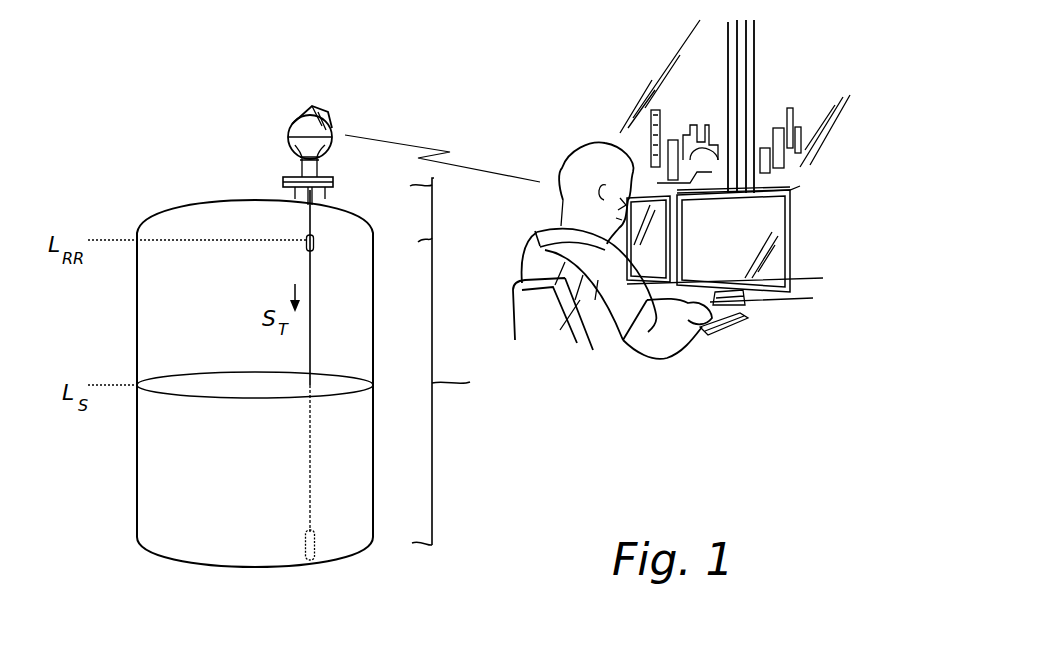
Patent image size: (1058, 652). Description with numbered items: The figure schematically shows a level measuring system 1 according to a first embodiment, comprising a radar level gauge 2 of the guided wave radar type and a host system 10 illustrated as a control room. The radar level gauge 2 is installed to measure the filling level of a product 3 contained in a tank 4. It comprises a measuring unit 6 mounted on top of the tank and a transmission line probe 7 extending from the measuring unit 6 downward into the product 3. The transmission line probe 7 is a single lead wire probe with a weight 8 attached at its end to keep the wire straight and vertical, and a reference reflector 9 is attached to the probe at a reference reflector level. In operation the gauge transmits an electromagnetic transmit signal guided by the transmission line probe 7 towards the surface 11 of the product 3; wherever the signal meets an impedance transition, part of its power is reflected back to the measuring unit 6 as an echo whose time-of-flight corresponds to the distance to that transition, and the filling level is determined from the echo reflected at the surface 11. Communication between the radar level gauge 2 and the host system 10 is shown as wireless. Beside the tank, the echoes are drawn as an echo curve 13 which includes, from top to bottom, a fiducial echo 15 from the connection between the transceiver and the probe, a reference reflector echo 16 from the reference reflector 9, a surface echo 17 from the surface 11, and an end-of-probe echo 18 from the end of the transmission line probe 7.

The level measuring system 1 is at (480, 64).
The radar level gauge 2 is at (263, 125).
The product 3 is at (232, 490).
The tank 4 is at (137, 327).
The measuring unit 6 is at (303, 115).
The transmission line probe 7 is at (311, 290).
The weight 8 is at (314, 545).
The reference reflector 9 is at (305, 245).
The host system 10 is at (790, 68).
The surface 11 is at (220, 383).
The echo curve 13 is at (478, 474).
The fiducial echo 15 is at (418, 180).
The reference reflector echo 16 is at (440, 240).
The surface echo 17 is at (470, 383).
The end-of-probe echo 18 is at (424, 549).